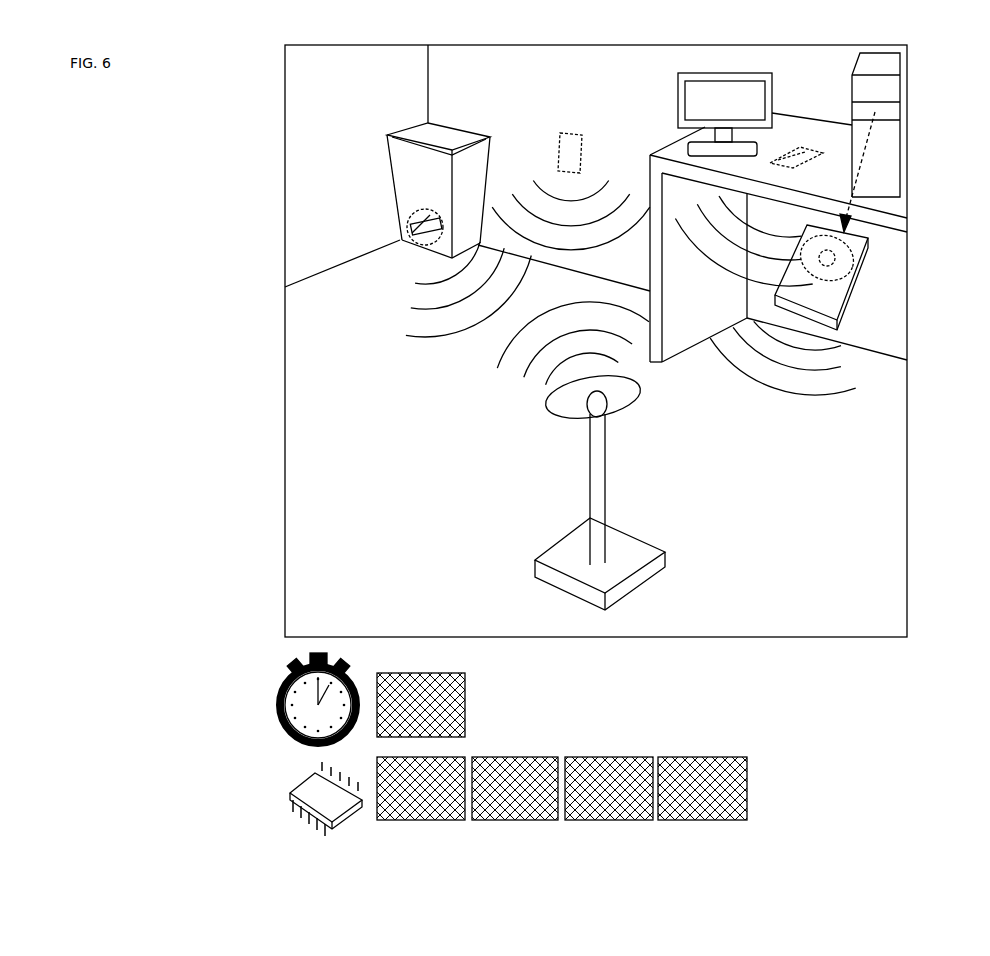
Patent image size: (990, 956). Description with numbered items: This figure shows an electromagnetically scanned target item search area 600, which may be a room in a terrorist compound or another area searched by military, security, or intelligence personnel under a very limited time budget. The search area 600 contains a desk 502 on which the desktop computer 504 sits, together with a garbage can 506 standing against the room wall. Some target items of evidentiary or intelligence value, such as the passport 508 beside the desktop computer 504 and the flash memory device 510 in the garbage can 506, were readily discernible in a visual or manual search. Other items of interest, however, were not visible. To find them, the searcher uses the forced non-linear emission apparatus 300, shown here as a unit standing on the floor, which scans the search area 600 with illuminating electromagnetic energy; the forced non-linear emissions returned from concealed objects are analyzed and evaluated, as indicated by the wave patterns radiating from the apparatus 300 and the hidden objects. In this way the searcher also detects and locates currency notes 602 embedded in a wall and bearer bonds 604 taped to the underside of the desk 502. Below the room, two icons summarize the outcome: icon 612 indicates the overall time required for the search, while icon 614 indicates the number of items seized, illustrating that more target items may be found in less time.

The electromagnetically scanned target item search area 600 is at (928, 115).
The forced non-linear emission (FNLE) apparatus 300 is at (622, 532).
The desk 502 is at (651, 216).
The desktop computer 504 is at (865, 63).
The garbage can 506 is at (391, 140).
The passport 508 is at (845, 297).
The flash memory device 510 is at (416, 244).
The currency notes 602 is at (560, 150).
The bearer bonds 604 is at (772, 170).
The icon indicating overall search time 612 is at (387, 672).
The icon indicating number of items seized 614 is at (387, 767).